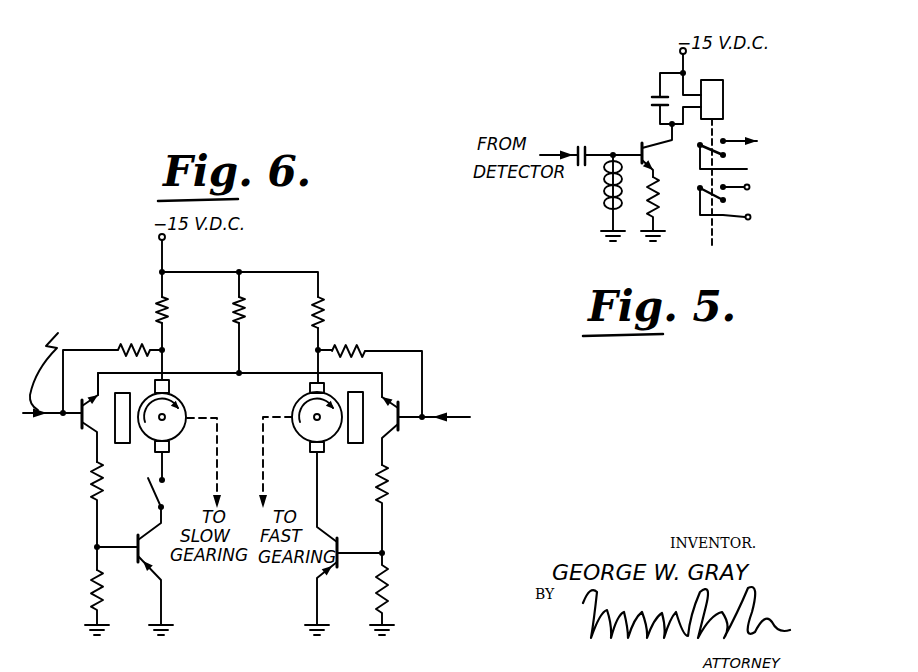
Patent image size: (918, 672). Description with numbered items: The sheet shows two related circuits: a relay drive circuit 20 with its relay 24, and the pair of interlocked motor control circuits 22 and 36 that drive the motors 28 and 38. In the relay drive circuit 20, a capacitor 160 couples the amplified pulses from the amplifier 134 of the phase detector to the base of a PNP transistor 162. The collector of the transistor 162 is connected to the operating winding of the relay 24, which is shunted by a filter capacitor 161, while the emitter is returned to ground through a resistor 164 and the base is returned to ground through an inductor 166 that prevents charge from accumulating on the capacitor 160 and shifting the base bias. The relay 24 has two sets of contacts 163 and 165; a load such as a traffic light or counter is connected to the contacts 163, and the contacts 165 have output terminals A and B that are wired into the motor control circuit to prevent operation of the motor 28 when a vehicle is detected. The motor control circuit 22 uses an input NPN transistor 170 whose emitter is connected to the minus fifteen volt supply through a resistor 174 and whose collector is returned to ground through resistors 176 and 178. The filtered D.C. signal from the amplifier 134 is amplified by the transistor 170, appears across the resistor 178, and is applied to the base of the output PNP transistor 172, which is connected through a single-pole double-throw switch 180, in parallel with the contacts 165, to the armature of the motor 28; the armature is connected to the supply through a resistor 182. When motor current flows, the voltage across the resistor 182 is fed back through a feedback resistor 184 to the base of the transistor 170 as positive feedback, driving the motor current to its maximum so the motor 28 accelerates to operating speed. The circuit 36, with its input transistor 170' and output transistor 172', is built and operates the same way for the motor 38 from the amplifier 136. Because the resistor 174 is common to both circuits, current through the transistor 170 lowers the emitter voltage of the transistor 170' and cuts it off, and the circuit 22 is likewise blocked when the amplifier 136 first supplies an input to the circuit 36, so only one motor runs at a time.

In FIG. 5, the relay drive circuit 20 is at (629, 134).
In FIG. 5, the relay 24 is at (769, 105).
In FIG. 5, the capacitor 160 is at (578, 145).
In FIG. 5, the filter capacitor 161 is at (657, 97).
In FIG. 5, the PNP transistor 162 is at (652, 148).
In FIG. 5, the contacts 163 is at (747, 169).
In FIG. 5, the resistor 164 is at (661, 192).
In FIG. 5, the contacts 165 is at (748, 210).
In FIG. 5, the inductor 166 is at (603, 190).
In FIG. 6, the motor control circuit 22 is at (152, 327).
In FIG. 6, the motor 28 is at (185, 401).
In FIG. 6, the motor control circuit 36 is at (368, 323).
In FIG. 6, the motor 38 is at (300, 442).
In FIG. 6, the amplifier 134 is at (80, 344).
In FIG. 6, the amplifier 136 is at (510, 416).
In FIG. 6, the input NPN transistor 170 is at (66, 417).
In FIG. 6, the input transistor 170' is at (414, 434).
In FIG. 6, the output PNP transistor 172 is at (135, 571).
In FIG. 6, the output transistor 172' is at (343, 543).
In FIG. 6, the resistor 174 is at (245, 318).
In FIG. 6, the resistor 176 is at (93, 485).
In FIG. 6, the resistor 178 is at (94, 588).
In FIG. 6, the S.P.D.T. switch 180 is at (148, 483).
In FIG. 6, the resistor 182 is at (168, 303).
In FIG. 6, the feedback resistor 184 is at (157, 349).